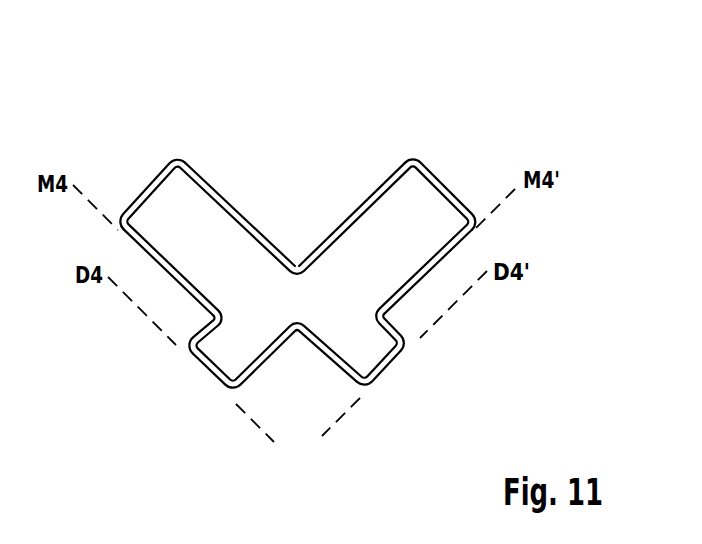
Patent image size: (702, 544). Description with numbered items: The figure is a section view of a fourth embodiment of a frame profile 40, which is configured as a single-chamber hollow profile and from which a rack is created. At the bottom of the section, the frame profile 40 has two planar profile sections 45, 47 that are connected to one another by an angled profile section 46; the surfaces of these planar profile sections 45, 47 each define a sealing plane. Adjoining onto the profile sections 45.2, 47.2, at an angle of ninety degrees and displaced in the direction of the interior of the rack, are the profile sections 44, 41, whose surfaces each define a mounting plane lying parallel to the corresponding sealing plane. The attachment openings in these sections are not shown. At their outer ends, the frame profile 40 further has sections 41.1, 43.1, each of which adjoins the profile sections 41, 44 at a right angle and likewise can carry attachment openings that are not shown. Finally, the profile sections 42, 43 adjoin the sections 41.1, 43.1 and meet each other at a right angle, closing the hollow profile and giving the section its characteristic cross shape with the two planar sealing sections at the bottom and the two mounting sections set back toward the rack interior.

The frame profile 40 is at (427, 96).
The profile section 41 is at (163, 266).
The section 41.1 is at (142, 191).
The profile section 42 is at (223, 197).
The profile section 43 is at (373, 191).
The section 43.1 is at (455, 194).
The profile section 44 is at (430, 272).
The planar profile section 45 is at (395, 366).
The profile section 45.2 is at (412, 333).
The angled profile section 46 is at (297, 333).
The planar profile section 47 is at (202, 364).
The profile section 47.2 is at (196, 333).